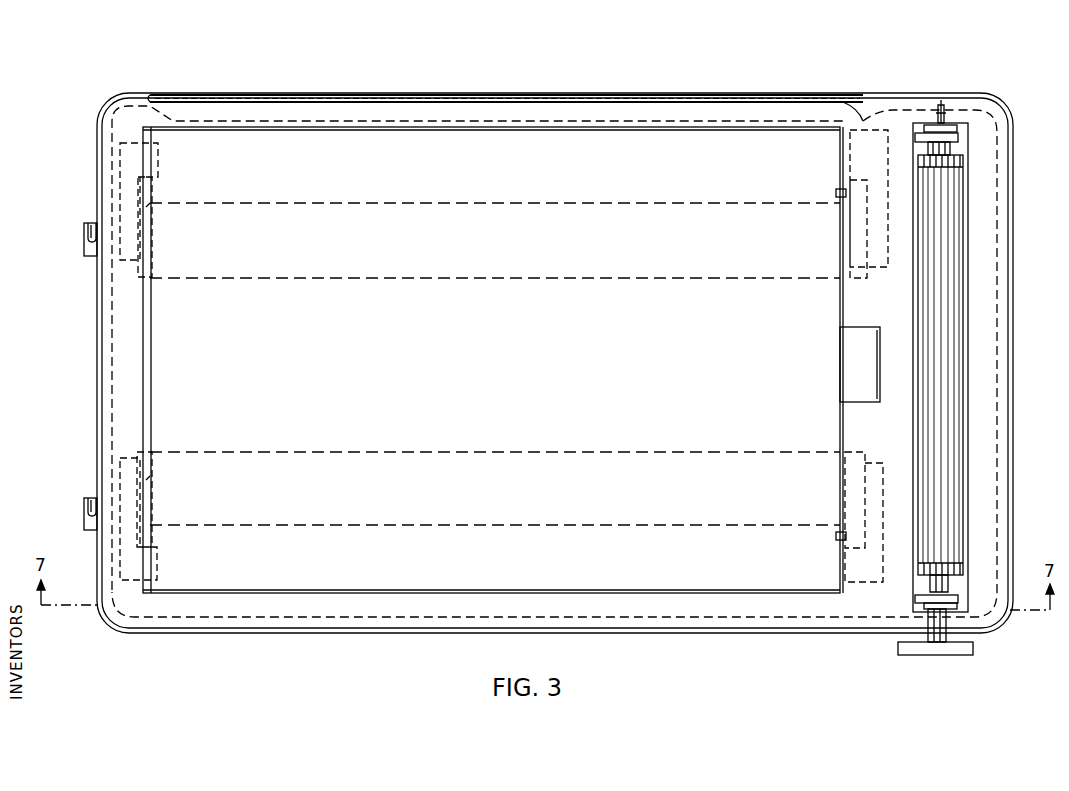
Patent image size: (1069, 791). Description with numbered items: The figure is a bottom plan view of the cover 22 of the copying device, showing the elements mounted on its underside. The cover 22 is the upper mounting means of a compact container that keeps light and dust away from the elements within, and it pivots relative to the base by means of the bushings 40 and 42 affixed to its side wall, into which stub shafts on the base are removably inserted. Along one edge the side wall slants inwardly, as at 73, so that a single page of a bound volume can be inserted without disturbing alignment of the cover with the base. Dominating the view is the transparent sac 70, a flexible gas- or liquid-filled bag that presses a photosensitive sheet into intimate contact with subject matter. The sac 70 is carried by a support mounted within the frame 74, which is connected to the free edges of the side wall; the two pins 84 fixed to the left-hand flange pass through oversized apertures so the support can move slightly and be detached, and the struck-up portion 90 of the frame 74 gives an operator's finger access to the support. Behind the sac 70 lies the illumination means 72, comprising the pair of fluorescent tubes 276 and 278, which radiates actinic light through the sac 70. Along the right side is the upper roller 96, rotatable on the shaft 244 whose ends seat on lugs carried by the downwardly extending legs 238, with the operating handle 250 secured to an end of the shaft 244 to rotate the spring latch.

The cover 22 is at (698, 90).
The inwardly slanted portion of side wall 73 is at (540, 103).
The transparent sac 70 is at (514, 361).
The frame 74 is at (137, 346).
The struck-up portion of frame 90 is at (869, 363).
The fluorescent tube 276 is at (404, 203).
The fluorescent tube 278 is at (436, 455).
The illumination means 72 is at (137, 207).
The bushing 40 is at (84, 245).
The bushing 42 is at (84, 515).
The pins 84 is at (836, 193).
The upper roller 96 is at (920, 292).
The shaft 244 is at (942, 105).
The downwardly extending legs 238 is at (915, 137).
The operating handle 250 is at (912, 650).